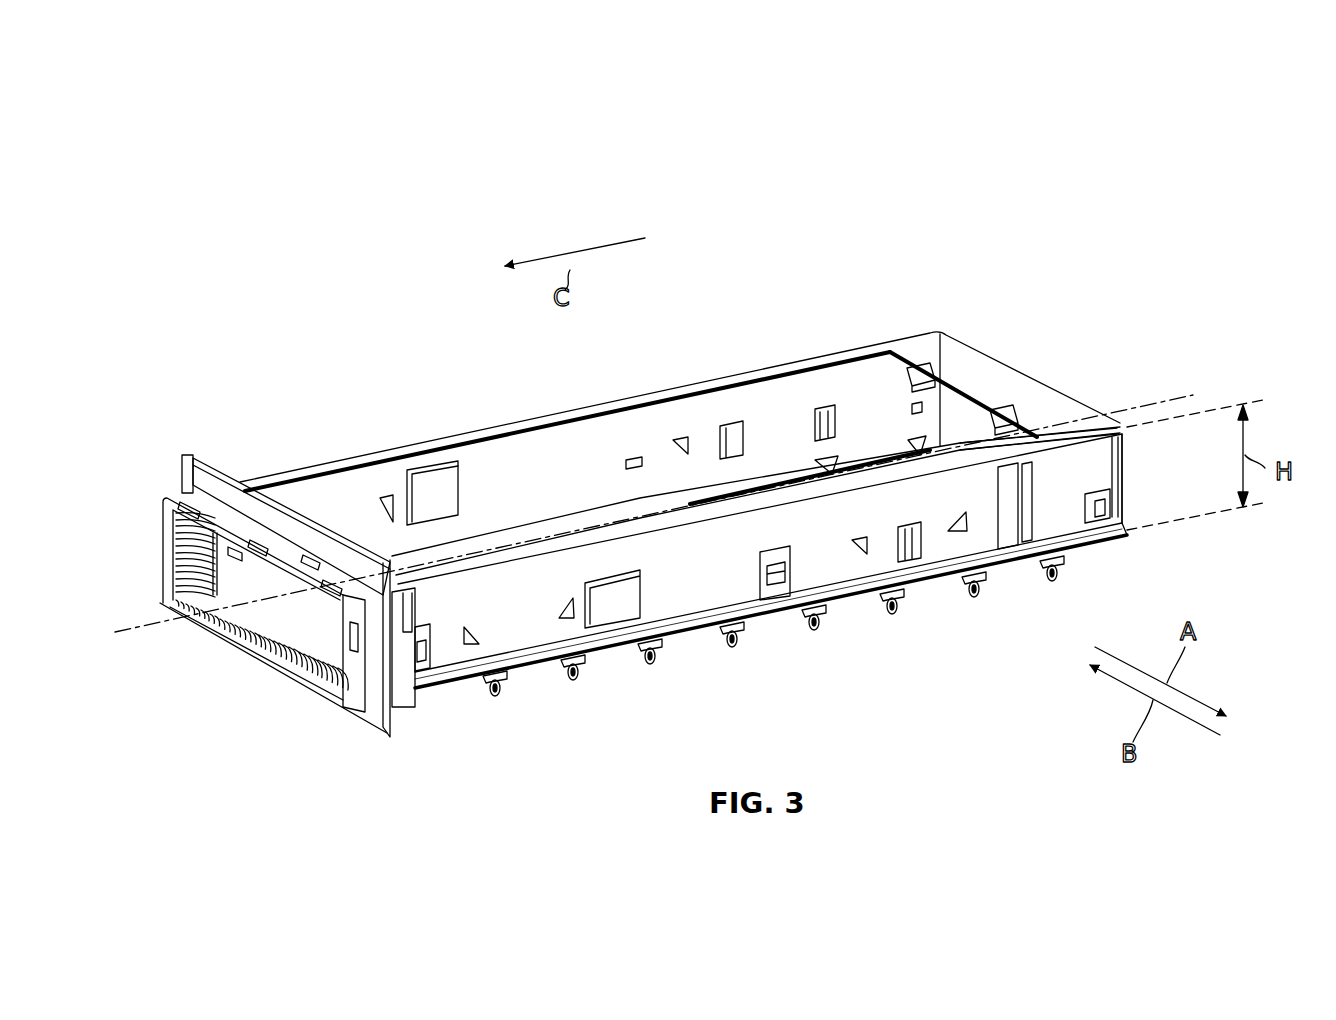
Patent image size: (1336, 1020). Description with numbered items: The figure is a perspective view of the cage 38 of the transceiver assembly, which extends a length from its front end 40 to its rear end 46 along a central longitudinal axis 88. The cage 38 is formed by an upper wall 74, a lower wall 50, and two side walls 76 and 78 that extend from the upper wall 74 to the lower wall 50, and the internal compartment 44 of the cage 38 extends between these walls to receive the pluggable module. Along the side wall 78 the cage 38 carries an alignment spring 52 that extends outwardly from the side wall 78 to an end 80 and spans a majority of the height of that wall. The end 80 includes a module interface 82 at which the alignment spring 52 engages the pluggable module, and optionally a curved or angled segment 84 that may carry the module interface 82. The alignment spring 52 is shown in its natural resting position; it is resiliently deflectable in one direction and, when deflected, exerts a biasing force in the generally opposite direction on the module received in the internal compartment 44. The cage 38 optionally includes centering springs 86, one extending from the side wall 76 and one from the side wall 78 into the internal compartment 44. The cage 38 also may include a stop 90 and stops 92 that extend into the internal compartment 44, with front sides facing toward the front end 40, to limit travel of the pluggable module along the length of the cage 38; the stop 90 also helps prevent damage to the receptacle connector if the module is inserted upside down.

The cage 38 is at (800, 177).
The front end 40 is at (410, 725).
The internal compartment 44 is at (376, 514).
The rear end 46 is at (1128, 556).
The lower wall 50 is at (463, 545).
The alignment spring 52 is at (1014, 468).
The upper wall 74 is at (745, 372).
The side wall 76 is at (545, 456).
The side wall 78 is at (683, 578).
The end of the alignment spring 80 is at (1030, 493).
The module interface 82 is at (1026, 514).
The curved and/or angled segment 84 is at (1018, 548).
The centering spring 86 is at (893, 540).
The central longitudinal axis 88 is at (1186, 394).
The stop 90 is at (823, 400).
The stop 92 is at (902, 372).